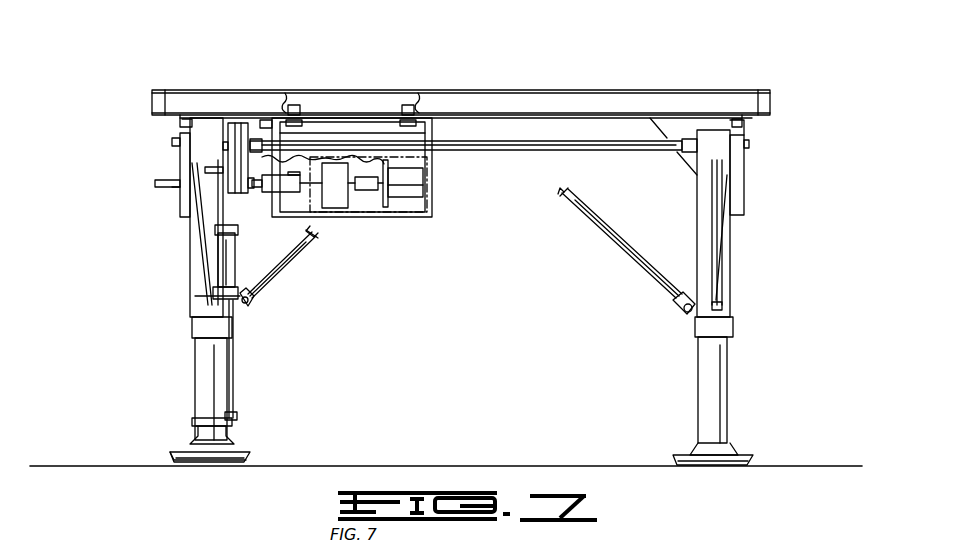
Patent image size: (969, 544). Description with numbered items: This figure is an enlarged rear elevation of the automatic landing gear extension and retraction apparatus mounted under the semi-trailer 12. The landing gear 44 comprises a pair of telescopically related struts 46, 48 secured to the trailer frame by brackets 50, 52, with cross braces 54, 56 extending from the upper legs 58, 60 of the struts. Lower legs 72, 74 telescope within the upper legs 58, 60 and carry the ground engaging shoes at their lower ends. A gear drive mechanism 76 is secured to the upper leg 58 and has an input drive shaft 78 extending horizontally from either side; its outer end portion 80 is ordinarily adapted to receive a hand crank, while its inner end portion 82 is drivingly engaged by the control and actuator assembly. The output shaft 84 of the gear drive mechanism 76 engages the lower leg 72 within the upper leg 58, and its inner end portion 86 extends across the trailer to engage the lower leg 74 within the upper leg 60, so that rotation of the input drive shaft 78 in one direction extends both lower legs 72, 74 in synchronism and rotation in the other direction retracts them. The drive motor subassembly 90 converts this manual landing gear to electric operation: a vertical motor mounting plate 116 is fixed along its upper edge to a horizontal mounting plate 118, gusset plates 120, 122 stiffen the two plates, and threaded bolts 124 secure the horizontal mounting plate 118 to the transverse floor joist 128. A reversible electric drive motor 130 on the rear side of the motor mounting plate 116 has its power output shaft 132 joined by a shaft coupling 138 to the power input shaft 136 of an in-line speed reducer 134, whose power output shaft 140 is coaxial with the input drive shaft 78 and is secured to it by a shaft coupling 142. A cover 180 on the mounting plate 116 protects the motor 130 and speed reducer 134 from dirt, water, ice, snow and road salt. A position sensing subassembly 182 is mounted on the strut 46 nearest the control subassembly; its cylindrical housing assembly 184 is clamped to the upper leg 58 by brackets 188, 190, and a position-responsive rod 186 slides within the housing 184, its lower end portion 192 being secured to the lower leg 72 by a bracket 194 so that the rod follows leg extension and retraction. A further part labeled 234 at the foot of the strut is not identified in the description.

The semi-trailer 12 is at (556, 89).
The landing gear 44 is at (204, 141).
The strut 46 is at (207, 170).
The strut 48 is at (732, 275).
The bracket 50 is at (185, 204).
The bracket 52 is at (738, 212).
The cross brace 54 is at (275, 280).
The cross brace 56 is at (632, 264).
The upper leg 58 is at (200, 150).
The upper leg 60 is at (725, 294).
The lower leg 72 is at (205, 355).
The lower leg 74 is at (712, 395).
The gear drive mechanism 76 is at (236, 122).
The input drive shaft 78 is at (175, 189).
The outer end portion 80 is at (174, 183).
The inner end portion 82 is at (262, 182).
The output shaft 84 is at (172, 142).
The inner end portion 86 is at (517, 147).
The drive motor subassembly 90 is at (428, 221).
The vertical motor mounting plate 116 is at (410, 218).
The horizontal mounting plate 118 is at (377, 125).
The gusset plate 120 is at (317, 238).
The gusset plate 122 is at (418, 205).
The threaded bolts 124 is at (300, 101).
The transverse floor joist 128 is at (414, 90).
The electric drive motor 130 is at (411, 181).
The power output shaft 132 is at (386, 206).
The in-line speed reducer 134 is at (346, 208).
The power input shaft 136 is at (362, 190).
The shaft coupling 138 is at (372, 190).
The power output shaft 140 is at (313, 156).
The shaft coupling 142 is at (276, 216).
The cover 180 is at (418, 226).
The position sensing subassembly 182 is at (216, 250).
The cylindrical housing assembly 184 is at (225, 263).
The position-responsive rod 186 is at (234, 357).
The bracket 188 is at (215, 225).
The bracket 190 is at (192, 292).
The lower end portion 192 is at (236, 411).
The bracket 194 is at (204, 420).
The foot 234 is at (204, 432).